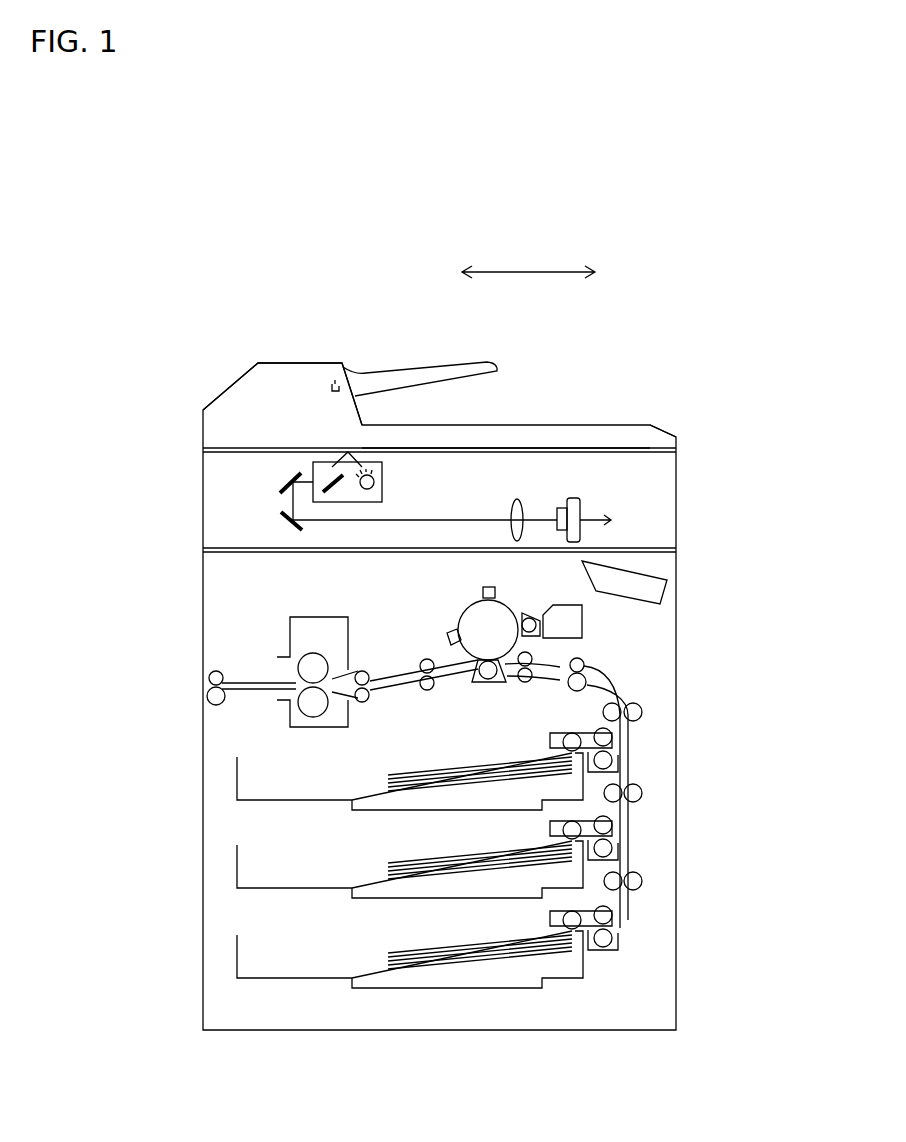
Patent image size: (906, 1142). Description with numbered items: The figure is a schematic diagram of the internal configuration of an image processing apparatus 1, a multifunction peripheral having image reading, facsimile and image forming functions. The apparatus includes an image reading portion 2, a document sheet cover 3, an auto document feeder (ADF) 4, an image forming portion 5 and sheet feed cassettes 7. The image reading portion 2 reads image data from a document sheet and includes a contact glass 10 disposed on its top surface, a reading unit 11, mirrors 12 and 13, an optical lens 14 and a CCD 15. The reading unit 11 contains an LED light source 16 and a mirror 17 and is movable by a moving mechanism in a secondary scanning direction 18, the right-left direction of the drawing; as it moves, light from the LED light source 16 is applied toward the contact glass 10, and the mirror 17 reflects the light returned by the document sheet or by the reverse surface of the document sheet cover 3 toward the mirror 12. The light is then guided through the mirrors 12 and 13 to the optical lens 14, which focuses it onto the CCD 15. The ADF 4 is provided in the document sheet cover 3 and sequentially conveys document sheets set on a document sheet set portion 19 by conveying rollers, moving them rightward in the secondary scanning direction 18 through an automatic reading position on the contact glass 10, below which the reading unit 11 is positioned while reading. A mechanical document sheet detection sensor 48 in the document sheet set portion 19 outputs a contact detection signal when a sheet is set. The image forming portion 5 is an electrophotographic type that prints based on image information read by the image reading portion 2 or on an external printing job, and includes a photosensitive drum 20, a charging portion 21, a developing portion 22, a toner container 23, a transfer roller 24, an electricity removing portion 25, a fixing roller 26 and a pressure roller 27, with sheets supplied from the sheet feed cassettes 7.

The image processing apparatus 1 is at (232, 1062).
The image reading portion 2 is at (680, 492).
The document sheet cover 3 is at (659, 431).
The auto document feeder 4 is at (278, 362).
The image forming portion 5 is at (680, 622).
The sheet feed cassettes 7 is at (363, 812).
The contact glass 10 is at (612, 448).
The reading unit 11 is at (385, 473).
The mirror 12 is at (276, 483).
The mirror 13 is at (276, 518).
The optical lens 14 is at (511, 500).
The CCD 15 is at (568, 497).
The LED light source 16 is at (377, 488).
The mirror 17 is at (337, 467).
The secondary scanning direction 18 is at (533, 271).
The document sheet set portion 19 is at (417, 367).
The photosensitive drum 20 is at (467, 613).
The charging portion 21 is at (495, 589).
The developing portion 22 is at (535, 618).
The toner container 23 is at (583, 623).
The transfer roller 24 is at (485, 690).
The electricity removing portion 25 is at (445, 633).
The fixing roller 26 is at (305, 660).
The pressure roller 27 is at (318, 710).
The document sheet detection sensor 48 is at (333, 383).